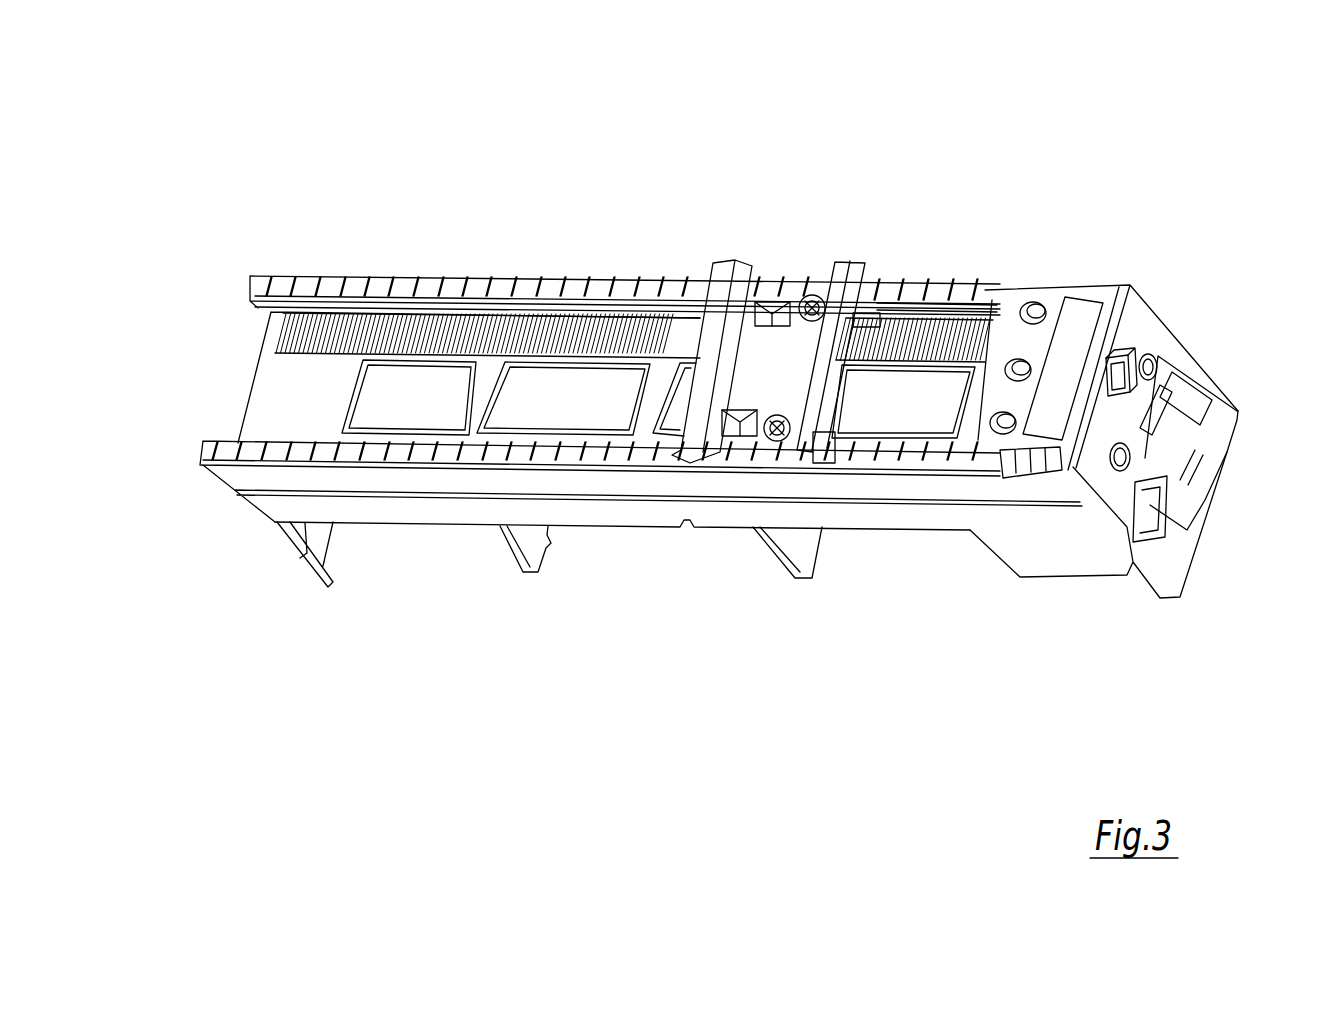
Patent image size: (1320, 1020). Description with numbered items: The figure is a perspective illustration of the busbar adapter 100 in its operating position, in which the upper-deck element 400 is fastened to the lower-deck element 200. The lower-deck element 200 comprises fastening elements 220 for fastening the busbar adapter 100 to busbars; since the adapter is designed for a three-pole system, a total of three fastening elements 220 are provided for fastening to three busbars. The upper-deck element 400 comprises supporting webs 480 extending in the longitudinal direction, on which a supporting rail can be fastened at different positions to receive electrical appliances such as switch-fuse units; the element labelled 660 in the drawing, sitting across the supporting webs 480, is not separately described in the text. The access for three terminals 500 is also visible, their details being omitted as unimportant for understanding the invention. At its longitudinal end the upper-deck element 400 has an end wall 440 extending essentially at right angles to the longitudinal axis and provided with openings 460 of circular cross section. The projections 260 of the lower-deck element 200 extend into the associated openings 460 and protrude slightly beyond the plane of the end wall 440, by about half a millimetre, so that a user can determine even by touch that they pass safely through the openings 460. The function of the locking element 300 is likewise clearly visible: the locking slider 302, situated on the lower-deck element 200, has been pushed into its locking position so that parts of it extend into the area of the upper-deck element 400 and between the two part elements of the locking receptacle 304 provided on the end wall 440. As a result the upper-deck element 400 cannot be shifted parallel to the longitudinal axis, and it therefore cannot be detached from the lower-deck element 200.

The busbar adapter 100 is at (283, 134).
The lower-deck element 200 is at (277, 541).
The fastening elements 220 is at (512, 555).
The projections 260 is at (1152, 362).
The locking element 300 is at (1197, 483).
The locking slider 302 is at (1200, 417).
The locking receptacle 304 is at (1168, 388).
The upper-deck element 400 is at (226, 478).
The end wall 440 is at (1132, 328).
The openings 460 is at (1148, 355).
The supporting webs 480 is at (237, 447).
The terminals 500 is at (1033, 308).
The clamp bar 660 is at (717, 283).